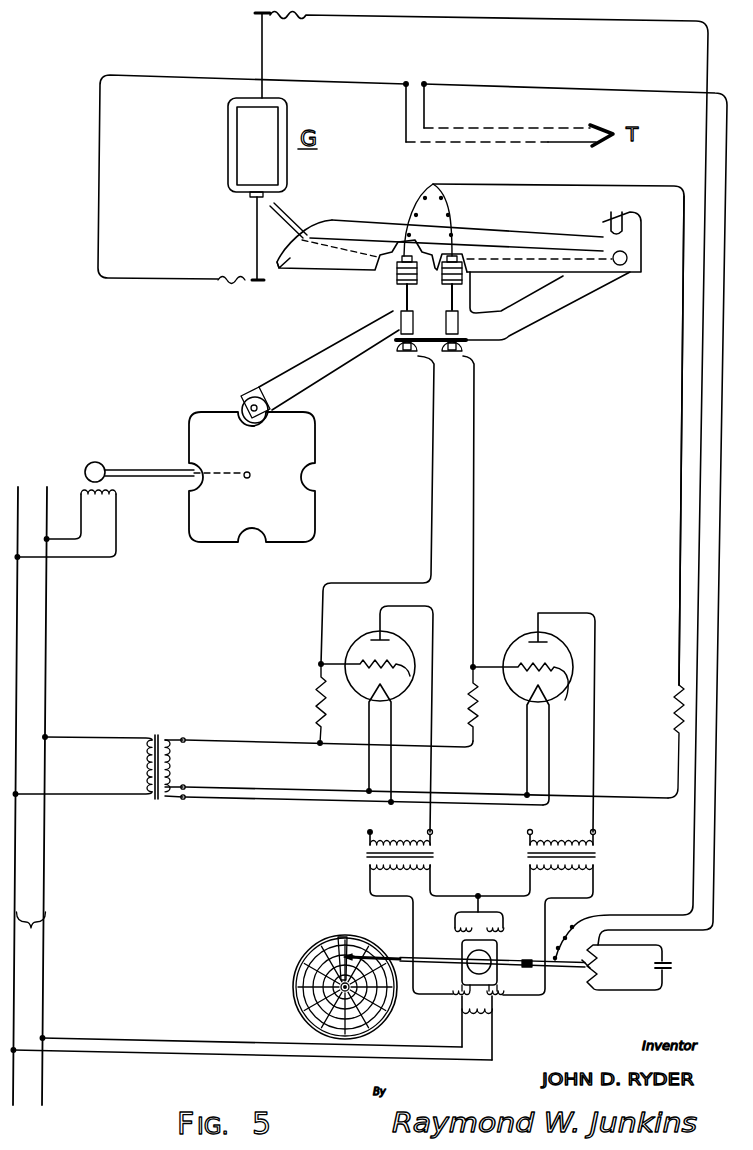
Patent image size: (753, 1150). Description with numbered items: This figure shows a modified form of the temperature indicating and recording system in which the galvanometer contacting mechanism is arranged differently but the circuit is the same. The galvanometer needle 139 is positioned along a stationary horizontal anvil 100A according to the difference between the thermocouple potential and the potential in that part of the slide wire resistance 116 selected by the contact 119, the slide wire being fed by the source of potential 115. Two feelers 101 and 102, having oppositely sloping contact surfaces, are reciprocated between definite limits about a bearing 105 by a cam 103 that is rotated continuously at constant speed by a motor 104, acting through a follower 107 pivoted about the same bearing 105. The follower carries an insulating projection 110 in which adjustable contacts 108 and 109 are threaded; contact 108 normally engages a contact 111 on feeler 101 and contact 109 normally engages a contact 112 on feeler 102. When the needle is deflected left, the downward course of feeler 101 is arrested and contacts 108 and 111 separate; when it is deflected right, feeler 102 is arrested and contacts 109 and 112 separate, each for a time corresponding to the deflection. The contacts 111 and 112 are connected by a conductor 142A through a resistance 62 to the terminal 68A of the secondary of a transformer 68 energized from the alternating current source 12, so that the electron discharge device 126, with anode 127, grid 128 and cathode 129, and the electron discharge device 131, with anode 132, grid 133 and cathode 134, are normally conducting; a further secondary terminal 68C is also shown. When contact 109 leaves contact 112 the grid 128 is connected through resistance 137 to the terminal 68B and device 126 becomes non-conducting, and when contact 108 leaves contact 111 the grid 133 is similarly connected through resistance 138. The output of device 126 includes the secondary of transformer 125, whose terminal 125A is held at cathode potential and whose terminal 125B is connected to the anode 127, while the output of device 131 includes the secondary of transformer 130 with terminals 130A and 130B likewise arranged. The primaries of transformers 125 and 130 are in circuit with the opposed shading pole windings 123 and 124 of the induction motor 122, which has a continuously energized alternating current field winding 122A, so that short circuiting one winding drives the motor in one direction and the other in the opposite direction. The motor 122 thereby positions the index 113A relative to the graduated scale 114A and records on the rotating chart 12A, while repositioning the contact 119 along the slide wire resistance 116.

The galvanometer needle 139 is at (290, 213).
The feeler 101 is at (287, 247).
The feeler 102 is at (356, 270).
The anvil 100A is at (300, 270).
The bearing 105 is at (621, 266).
The contact 111 is at (397, 288).
The contact 112 is at (466, 288).
The adjustable contact 108 is at (410, 362).
The adjustable contact 109 is at (446, 364).
The projection 110 is at (470, 342).
The follower 107 is at (336, 390).
The cam 103 is at (322, 450).
The motor 104 is at (94, 462).
The alternating current source 12 is at (30, 796).
The electron discharge device 131 is at (360, 640).
The anode 132 is at (378, 630).
The grid 133 is at (410, 680).
The cathode 134 is at (367, 694).
The electron discharge device 126 is at (519, 640).
The anode 127 is at (547, 640).
The grid 128 is at (566, 700).
The cathode 129 is at (525, 696).
The resistance 138 is at (317, 705).
The resistance 137 is at (475, 730).
The resistance 62 is at (674, 713).
The conductor 142A is at (681, 500).
The transformer 68 is at (91, 756).
The secondary terminal 68B is at (184, 738).
The secondary terminal 68A is at (184, 786).
The secondary terminal 68C is at (184, 800).
The transformer 130 is at (448, 918).
The secondary terminal 130A is at (368, 832).
The secondary terminal 130B is at (433, 832).
The transformer 125 is at (569, 918).
The secondary terminal 125A is at (528, 833).
The secondary terminal 125B is at (596, 832).
The induction motor 122 is at (449, 952).
The shading pole winding 124 is at (460, 998).
The shading pole winding 123 is at (500, 998).
The alternating current field winding 122A is at (492, 1022).
The chart 12A is at (295, 978).
The scale 114A is at (337, 940).
The index 113A is at (398, 952).
The slide wire resistance 116 is at (595, 955).
The source of potential 115 is at (672, 966).
The contact 119 is at (570, 967).